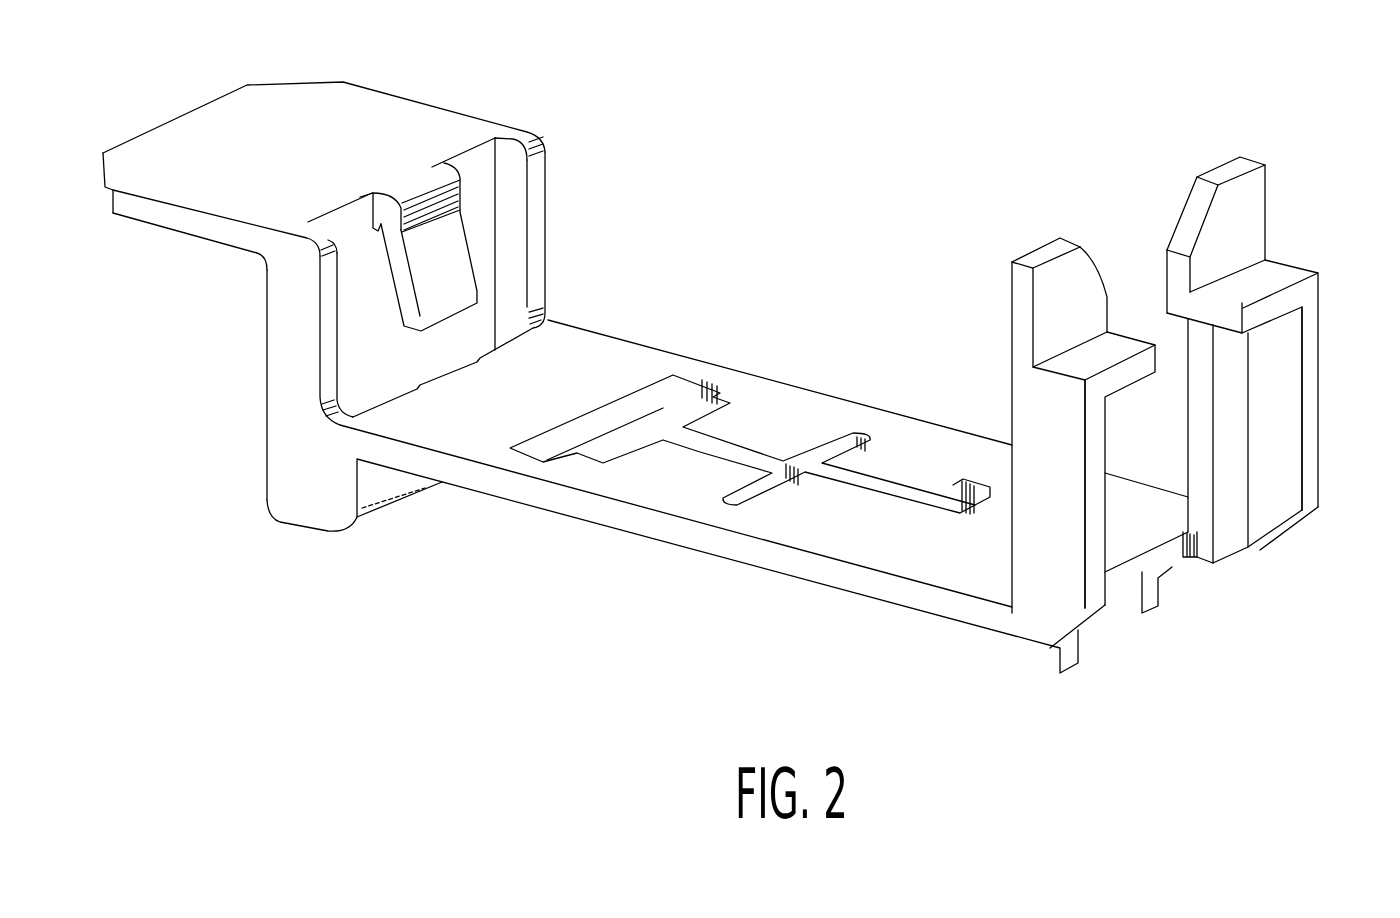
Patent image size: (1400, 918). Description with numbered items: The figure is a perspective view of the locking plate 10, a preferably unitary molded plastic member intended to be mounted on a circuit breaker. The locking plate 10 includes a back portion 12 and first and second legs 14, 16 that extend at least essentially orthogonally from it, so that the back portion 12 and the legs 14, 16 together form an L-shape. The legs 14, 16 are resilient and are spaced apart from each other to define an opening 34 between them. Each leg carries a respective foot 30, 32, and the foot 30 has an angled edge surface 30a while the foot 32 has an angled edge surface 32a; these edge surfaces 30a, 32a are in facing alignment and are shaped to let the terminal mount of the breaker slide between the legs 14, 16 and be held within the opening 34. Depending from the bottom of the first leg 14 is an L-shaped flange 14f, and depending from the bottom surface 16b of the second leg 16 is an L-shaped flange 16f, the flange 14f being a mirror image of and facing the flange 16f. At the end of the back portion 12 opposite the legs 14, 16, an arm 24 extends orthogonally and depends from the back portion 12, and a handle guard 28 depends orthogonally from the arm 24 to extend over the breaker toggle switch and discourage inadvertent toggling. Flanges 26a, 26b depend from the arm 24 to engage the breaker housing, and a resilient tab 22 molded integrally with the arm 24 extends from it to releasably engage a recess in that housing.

The locking plate 10 is at (735, 580).
The back portion 12 is at (777, 418).
The first leg 14 is at (1070, 542).
The L-shaped flange 14f is at (1105, 383).
The second leg 16 is at (1221, 518).
The bottom surface 16b is at (1227, 400).
The L-shaped flange 16f is at (1312, 350).
The resilient tab 22 is at (433, 268).
The arm 24 is at (285, 360).
The flange 26a is at (328, 372).
The flange 26b is at (537, 177).
The handle guard 28 is at (365, 118).
The foot 30 is at (1037, 257).
The angled edge surface 30a is at (1097, 258).
The foot 32 is at (1265, 165).
The angled edge surface 32a is at (1183, 207).
The opening 34 is at (1132, 521).